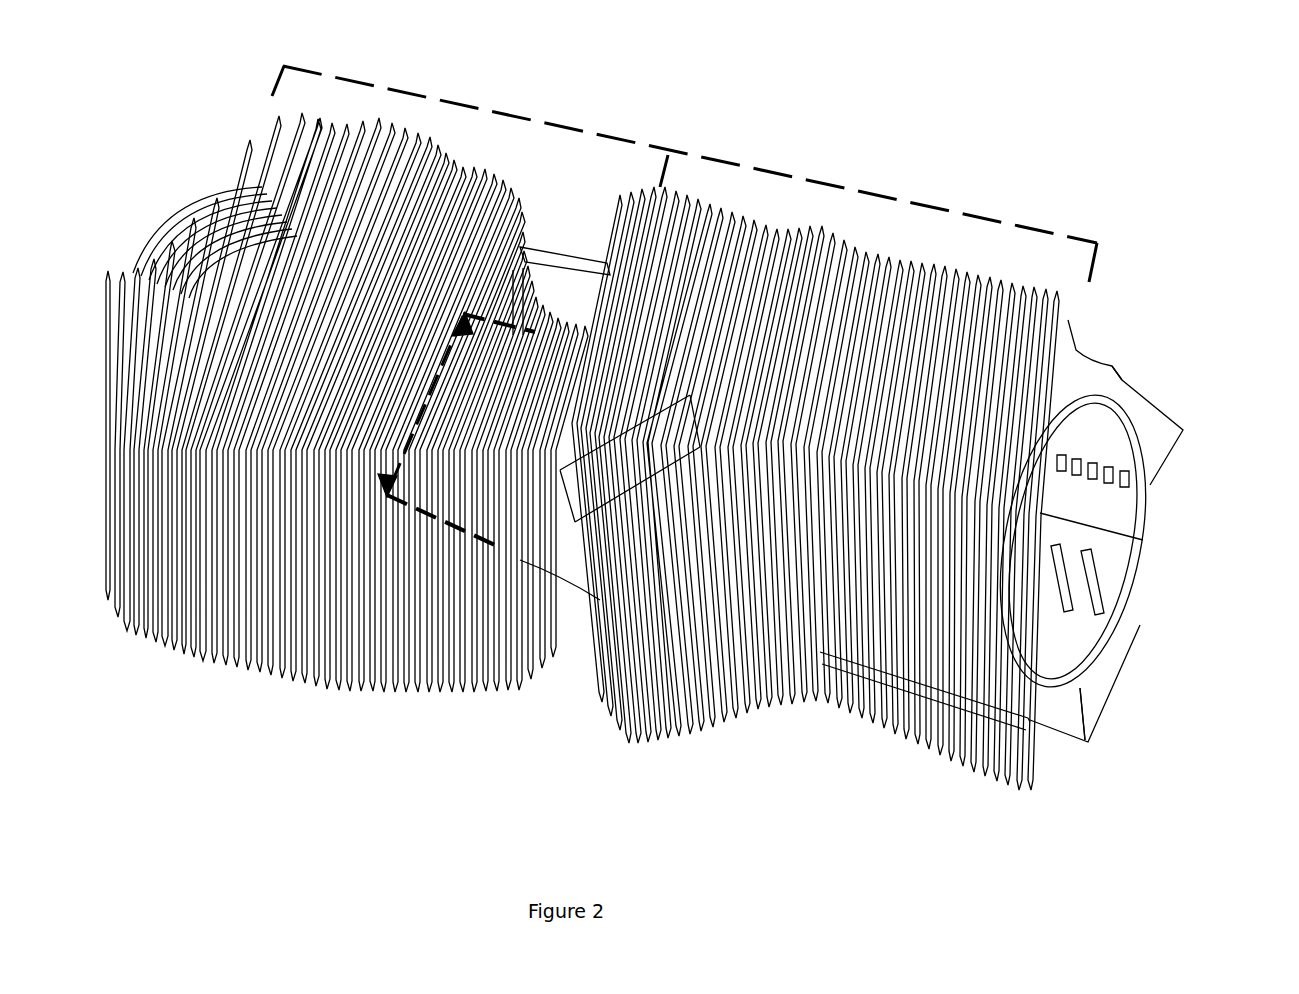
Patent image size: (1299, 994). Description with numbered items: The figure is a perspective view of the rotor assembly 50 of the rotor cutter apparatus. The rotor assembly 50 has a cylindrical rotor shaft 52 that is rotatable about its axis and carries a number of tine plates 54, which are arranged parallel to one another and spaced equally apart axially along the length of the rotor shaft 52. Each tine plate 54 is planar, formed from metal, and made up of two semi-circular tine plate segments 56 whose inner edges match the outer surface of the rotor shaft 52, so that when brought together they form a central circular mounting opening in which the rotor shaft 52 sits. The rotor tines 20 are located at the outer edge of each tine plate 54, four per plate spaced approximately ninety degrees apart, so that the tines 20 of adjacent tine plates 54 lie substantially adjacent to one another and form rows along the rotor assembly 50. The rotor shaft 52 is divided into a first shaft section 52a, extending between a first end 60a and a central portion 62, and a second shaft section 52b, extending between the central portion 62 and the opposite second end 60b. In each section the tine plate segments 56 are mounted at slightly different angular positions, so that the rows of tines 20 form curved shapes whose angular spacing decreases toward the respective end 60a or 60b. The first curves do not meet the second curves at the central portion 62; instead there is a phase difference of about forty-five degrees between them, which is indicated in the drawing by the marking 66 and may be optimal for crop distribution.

The rotor assembly 50 is at (988, 73).
The first end 60a is at (135, 228).
The second end 60b is at (1148, 578).
The first shaft section 52a is at (684, 154).
The second shaft section 52b is at (882, 216).
The rotor shaft 52 is at (1122, 550).
The spacer gap 66 is at (421, 398).
The central portion 62 is at (528, 700).
The rotor tines 20 is at (1068, 322).
The tine plate segments 56 is at (1115, 355).
The tine plates 54 is at (1028, 718).